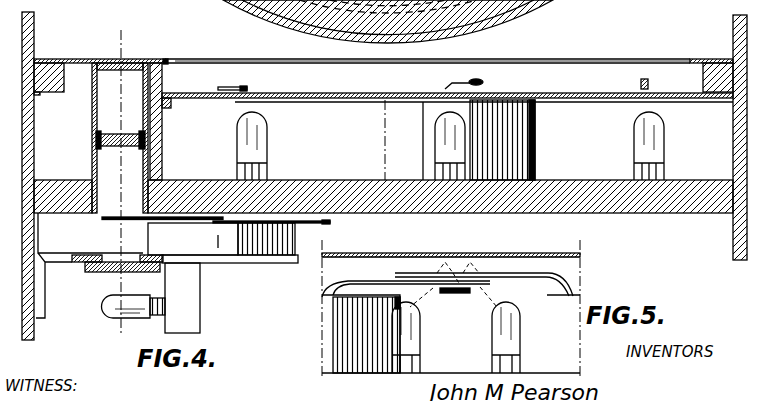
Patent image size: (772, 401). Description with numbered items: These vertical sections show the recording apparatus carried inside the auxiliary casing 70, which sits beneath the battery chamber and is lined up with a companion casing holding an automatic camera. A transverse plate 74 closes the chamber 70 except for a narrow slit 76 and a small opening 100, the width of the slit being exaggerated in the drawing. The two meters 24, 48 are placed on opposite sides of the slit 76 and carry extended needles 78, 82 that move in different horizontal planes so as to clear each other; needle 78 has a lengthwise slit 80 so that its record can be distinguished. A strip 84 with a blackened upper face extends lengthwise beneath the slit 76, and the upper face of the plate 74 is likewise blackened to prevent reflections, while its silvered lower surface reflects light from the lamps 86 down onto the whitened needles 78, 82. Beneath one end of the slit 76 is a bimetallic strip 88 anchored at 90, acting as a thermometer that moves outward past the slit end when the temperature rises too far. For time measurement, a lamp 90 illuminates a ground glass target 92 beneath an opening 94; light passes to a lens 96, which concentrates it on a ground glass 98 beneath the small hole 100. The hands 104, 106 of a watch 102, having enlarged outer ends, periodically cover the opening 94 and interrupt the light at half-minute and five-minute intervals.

In FIG. 4, the meter 24 is at (349, 163).
In FIG. 5, the meter 24 is at (549, 295).
In FIG. 5, the meter 48 is at (347, 358).
In FIG. 4, the auxiliary casing 70 is at (735, 26).
In FIG. 4, the transverse plate 74 is at (566, 59).
In FIG. 5, the transverse plate 74 is at (516, 254).
In FIG. 4, the slit 76 is at (219, 60).
In FIG. 5, the slit 76 is at (455, 253).
In FIG. 4, the needle 78 is at (446, 84).
In FIG. 5, the needle 78 is at (553, 282).
In FIG. 4, the lengthwise slit 80 is at (479, 79).
In FIG. 4, the needle 82 is at (248, 89).
In FIG. 5, the needle 82 is at (377, 282).
In FIG. 4, the strip 84 is at (567, 100).
In FIG. 5, the strip 84 is at (450, 294).
In FIG. 4, the lamps 86 is at (268, 138).
In FIG. 5, the lamps 86 is at (496, 344).
In FIG. 4, the bimetallic strip 88 is at (640, 84).
In FIG. 4, the lamp 90 is at (106, 312).
In FIG. 4, the ground glass target 92 is at (110, 272).
In FIG. 4, the opening 94 is at (100, 190).
In FIG. 4, the lens 96 is at (108, 137).
In FIG. 4, the ground glass 98 is at (106, 62).
In FIG. 4, the small opening 100 is at (122, 60).
In FIG. 4, the watch 102 is at (246, 243).
In FIG. 4, the hand 104 is at (118, 220).
In FIG. 4, the hand 106 is at (313, 223).